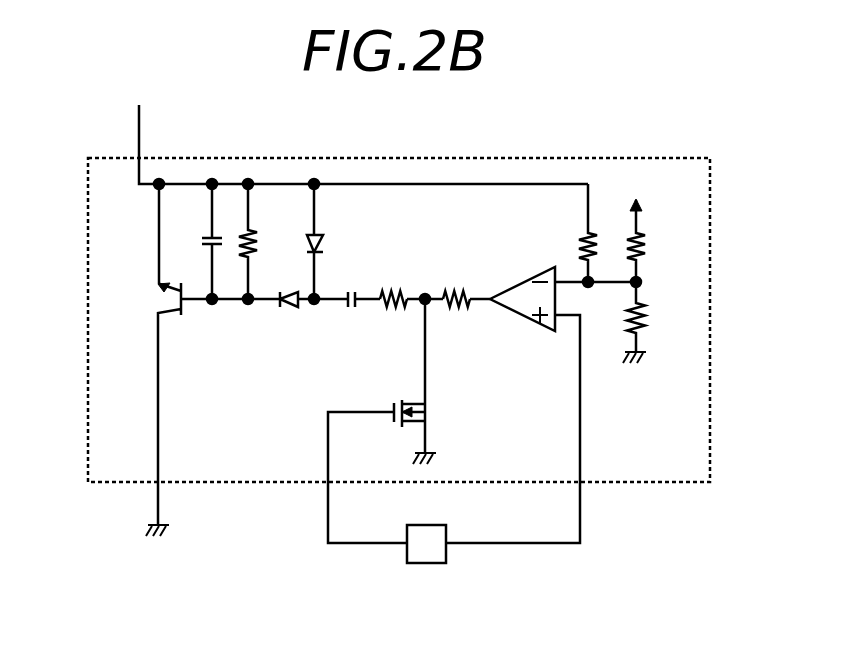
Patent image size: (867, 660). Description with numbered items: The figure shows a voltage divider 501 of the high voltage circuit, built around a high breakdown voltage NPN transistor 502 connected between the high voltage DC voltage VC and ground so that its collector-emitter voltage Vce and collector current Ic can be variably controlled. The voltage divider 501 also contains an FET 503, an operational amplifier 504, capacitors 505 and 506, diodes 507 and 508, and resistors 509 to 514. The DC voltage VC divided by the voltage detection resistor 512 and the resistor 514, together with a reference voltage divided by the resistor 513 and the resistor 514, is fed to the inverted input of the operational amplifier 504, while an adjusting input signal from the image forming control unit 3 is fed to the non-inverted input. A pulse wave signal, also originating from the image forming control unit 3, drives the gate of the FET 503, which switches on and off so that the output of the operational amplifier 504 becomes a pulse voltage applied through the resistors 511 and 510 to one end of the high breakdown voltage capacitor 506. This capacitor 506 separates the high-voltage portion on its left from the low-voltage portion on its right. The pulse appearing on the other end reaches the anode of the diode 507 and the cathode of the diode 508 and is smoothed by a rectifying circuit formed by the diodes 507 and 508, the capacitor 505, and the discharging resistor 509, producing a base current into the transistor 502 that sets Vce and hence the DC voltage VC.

The voltage divider 501 is at (285, 158).
The NPN transistor 502 is at (175, 318).
The FET 503 is at (398, 400).
The operational amplifier 504 is at (508, 290).
The capacitor 505 is at (204, 238).
The capacitor 506 is at (350, 308).
The diode 507 is at (288, 308).
The diode 508 is at (323, 243).
The resistor 509 is at (258, 240).
The resistor 510 is at (395, 292).
The resistor 511 is at (458, 308).
The resistor 512 is at (580, 245).
The resistor 513 is at (645, 248).
The resistor 514 is at (645, 320).
The image forming control unit 3 is at (407, 563).